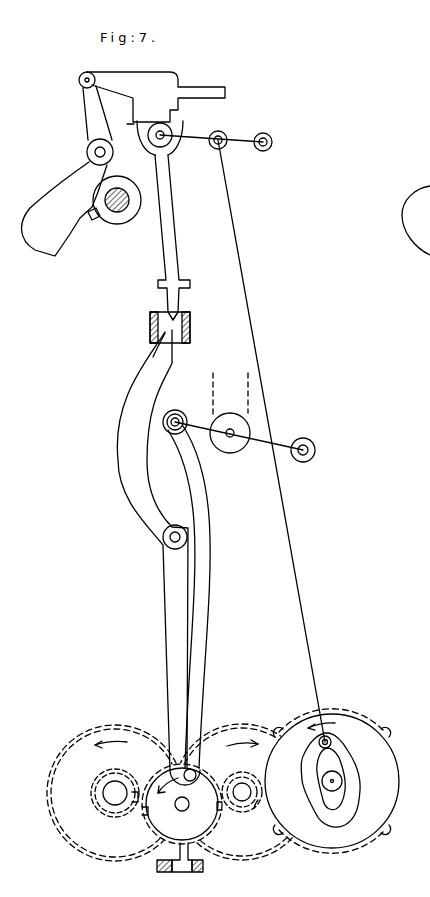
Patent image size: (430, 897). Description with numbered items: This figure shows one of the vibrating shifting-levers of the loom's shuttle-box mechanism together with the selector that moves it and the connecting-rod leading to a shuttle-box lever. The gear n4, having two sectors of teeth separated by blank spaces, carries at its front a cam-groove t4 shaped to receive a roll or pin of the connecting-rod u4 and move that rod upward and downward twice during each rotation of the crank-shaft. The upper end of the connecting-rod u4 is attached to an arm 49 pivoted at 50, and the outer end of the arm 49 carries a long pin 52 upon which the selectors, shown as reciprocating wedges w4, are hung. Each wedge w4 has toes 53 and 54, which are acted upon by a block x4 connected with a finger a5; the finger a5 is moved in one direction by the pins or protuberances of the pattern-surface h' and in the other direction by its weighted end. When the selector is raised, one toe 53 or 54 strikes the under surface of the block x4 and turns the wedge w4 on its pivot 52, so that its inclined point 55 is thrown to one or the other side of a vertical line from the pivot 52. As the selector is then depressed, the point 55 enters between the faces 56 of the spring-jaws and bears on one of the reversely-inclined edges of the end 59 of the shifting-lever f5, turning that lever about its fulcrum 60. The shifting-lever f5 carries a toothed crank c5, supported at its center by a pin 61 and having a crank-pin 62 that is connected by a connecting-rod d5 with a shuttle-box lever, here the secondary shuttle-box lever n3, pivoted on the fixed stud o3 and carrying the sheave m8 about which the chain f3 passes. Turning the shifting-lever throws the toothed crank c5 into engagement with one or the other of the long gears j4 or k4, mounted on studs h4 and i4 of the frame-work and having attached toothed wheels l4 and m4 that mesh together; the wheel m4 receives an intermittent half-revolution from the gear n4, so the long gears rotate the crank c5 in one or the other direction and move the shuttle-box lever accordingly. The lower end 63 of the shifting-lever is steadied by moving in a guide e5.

The block x4 is at (152, 97).
The toe 53 is at (122, 123).
The toe 54 is at (185, 121).
The long pin 52 is at (157, 141).
The arm 49 is at (203, 143).
The pivot 50 is at (270, 137).
The finger a5 is at (73, 180).
The pattern-surface h' is at (114, 209).
The reciprocating wedge w4 is at (177, 237).
The inclined point 55 is at (180, 311).
The face of spring-jaws 56 is at (150, 327).
The end of shifting-lever 59 is at (157, 346).
The curved arm f5 is at (116, 425).
The fulcrum 60 is at (164, 541).
The connecting-rod d5 is at (205, 660).
The secondary shuttle-box lever n3 is at (283, 441).
The fixed stud o3 is at (313, 448).
The roller m8 is at (232, 441).
The chain f3 is at (230, 393).
The connecting-rod u4 is at (271, 441).
The toothed wheel l4 is at (112, 793).
The toothed gear j4 is at (103, 800).
The stud h4 is at (423, 768).
The toothed wheel m4 is at (242, 780).
The stud i4 is at (242, 792).
The toothed gear k4 is at (251, 814).
The toothed crank c5 is at (182, 804).
The pin 61 is at (190, 803).
The crank-pin 62 is at (197, 772).
The lower end of shifting-lever 63 is at (187, 872).
The guide e5 is at (157, 866).
The gear n4 is at (396, 796).
The cam-groove t4 is at (331, 780).